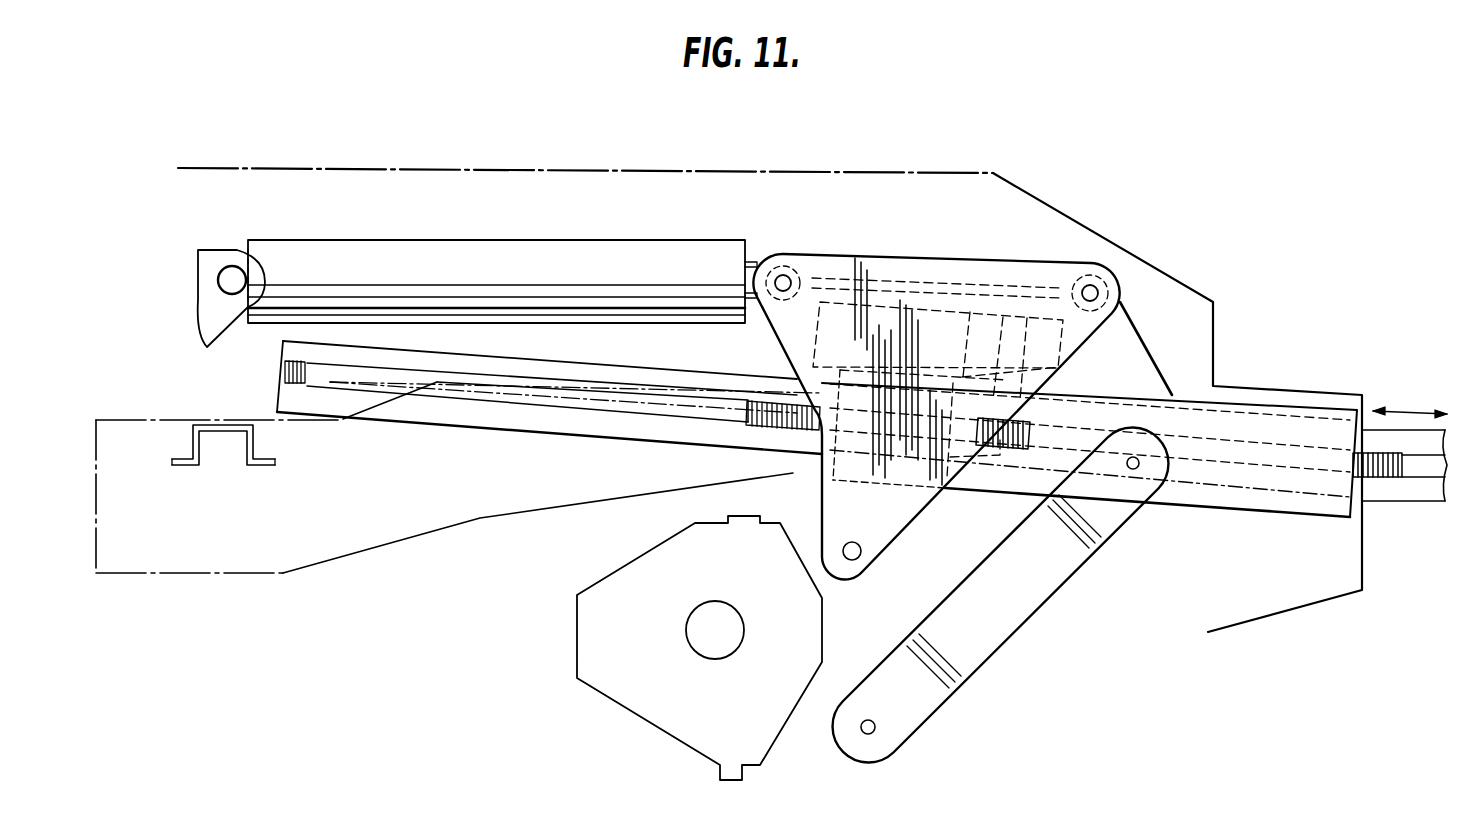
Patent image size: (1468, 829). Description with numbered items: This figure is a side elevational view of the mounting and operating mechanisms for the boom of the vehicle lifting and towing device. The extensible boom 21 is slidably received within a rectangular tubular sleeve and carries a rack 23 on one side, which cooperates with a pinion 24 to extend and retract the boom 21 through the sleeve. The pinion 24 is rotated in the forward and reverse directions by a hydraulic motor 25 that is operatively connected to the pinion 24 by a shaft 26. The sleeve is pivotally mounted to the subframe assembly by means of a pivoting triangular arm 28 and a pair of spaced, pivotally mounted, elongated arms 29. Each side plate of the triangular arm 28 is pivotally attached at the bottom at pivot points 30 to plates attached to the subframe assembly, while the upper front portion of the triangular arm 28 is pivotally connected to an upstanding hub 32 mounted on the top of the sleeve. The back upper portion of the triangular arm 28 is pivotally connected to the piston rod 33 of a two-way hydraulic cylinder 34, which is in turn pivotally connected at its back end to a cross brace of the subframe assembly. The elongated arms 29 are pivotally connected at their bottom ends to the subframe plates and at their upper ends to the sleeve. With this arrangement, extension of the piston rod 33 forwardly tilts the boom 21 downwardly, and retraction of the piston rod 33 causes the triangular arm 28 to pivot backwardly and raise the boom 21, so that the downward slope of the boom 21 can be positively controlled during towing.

The extensible boom 21 is at (1440, 495).
The rack 23 is at (1394, 477).
The pinion 24 is at (1033, 430).
The hydraulic motor 25 is at (946, 337).
The shaft 26 is at (1035, 357).
The triangular arm 28 is at (822, 507).
The elongated arms 29 is at (1024, 627).
The pivot points 30 is at (850, 562).
The upstanding hub 32 is at (1140, 333).
The piston rod 33 is at (763, 262).
The hydraulic cylinder 34 is at (597, 240).